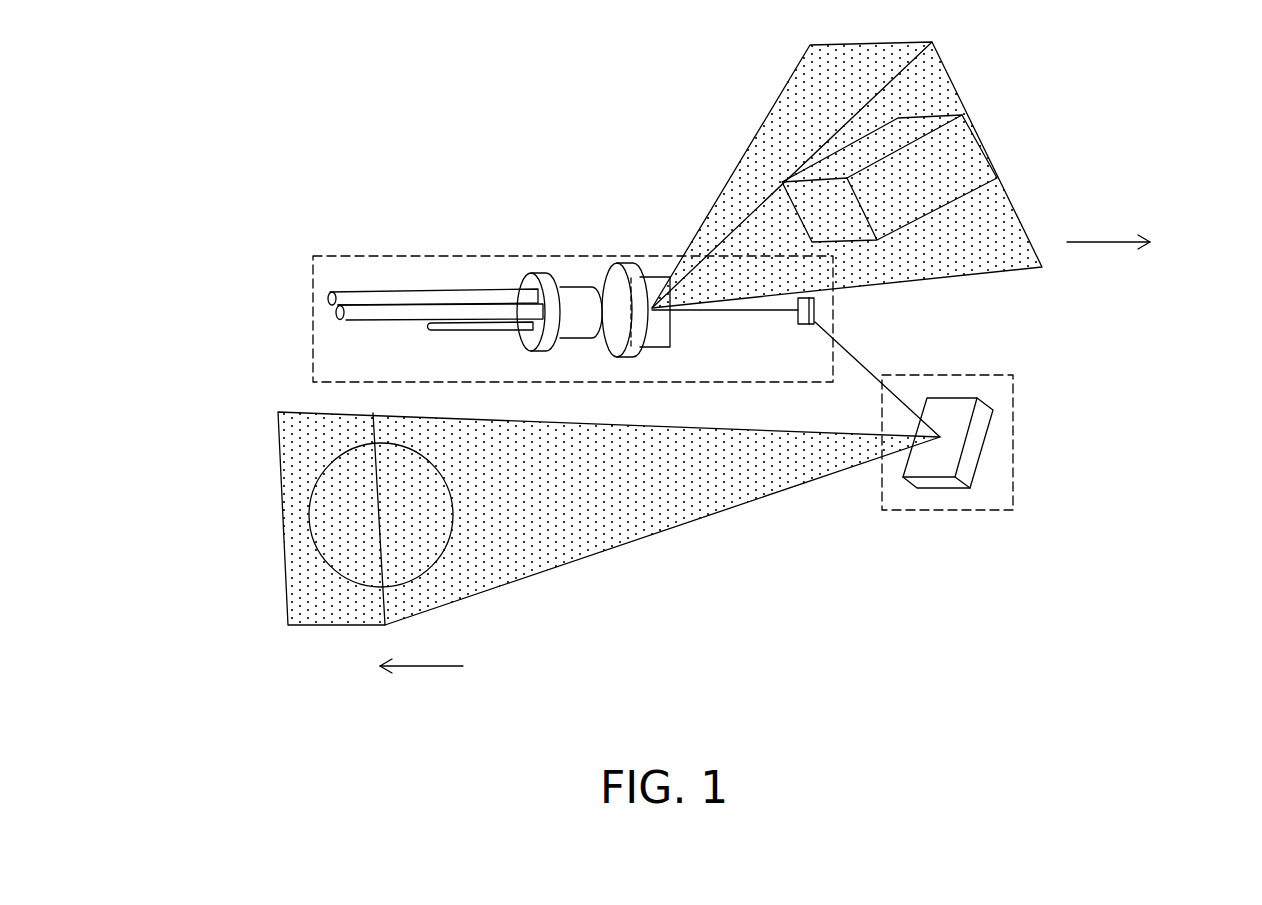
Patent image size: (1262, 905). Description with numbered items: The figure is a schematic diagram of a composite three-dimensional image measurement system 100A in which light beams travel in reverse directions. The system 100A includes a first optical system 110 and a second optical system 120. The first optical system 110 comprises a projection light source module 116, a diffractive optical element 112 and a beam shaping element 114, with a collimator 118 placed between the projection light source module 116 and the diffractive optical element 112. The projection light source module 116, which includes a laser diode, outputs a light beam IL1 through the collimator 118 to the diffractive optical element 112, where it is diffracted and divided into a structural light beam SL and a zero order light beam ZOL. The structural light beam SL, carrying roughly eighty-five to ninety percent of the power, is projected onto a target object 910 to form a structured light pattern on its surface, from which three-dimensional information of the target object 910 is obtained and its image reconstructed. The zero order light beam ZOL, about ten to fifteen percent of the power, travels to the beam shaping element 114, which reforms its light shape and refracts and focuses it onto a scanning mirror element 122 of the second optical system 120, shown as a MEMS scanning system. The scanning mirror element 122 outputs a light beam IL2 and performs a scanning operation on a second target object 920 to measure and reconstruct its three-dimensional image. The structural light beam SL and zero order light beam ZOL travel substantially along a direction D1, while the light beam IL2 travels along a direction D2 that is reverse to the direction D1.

The 3D image measurement system 100A is at (1252, 686).
The first optical system 110 is at (390, 255).
The diffractive optical element 112 is at (659, 276).
The beam shaping element 114 is at (817, 308).
The projection light source module 116 is at (576, 283).
The collimator 118 is at (624, 262).
The second optical system 120 is at (1014, 452).
The scanning mirror element 122 is at (980, 430).
The target object 910 is at (970, 152).
The target object 920 is at (330, 507).
The structural light beam SL is at (730, 173).
The light beam IL1 is at (599, 311).
The light beam IL2 is at (642, 548).
The zero order light beam ZOL is at (757, 312).
The direction D1 is at (1126, 243).
The direction D2 is at (405, 668).